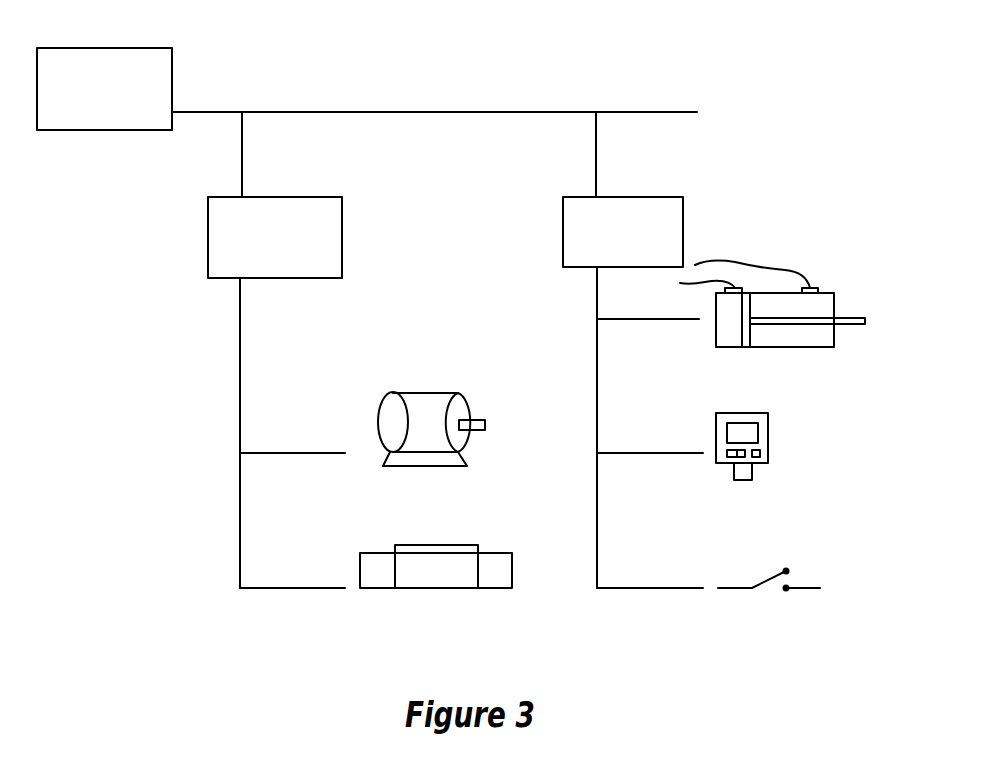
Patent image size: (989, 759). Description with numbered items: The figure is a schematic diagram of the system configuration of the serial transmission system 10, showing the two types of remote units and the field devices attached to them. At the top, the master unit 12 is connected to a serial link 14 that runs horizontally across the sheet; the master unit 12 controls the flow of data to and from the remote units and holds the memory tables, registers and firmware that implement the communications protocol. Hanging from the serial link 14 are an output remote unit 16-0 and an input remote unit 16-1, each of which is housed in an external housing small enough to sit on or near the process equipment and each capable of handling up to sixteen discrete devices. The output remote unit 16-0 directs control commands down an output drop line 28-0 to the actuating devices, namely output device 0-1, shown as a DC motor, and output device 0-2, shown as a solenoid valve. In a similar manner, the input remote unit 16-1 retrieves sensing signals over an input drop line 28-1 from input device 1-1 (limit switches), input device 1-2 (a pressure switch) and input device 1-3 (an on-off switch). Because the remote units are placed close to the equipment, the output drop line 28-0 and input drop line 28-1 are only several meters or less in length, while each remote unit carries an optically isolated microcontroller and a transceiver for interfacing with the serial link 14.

The serial transmission system 10 is at (636, 75).
The master unit 12 is at (165, 62).
The serial link 14 is at (331, 112).
The output remote unit 16-0 is at (335, 205).
The input remote unit 16-1 is at (677, 211).
The output drop line 28-0 is at (238, 358).
The input drop line 28-1 is at (596, 377).
The output device 0-1 is at (420, 407).
The output device 0-2 is at (441, 550).
The input device 1-1 is at (827, 300).
The input device 1-2 is at (763, 437).
The input device 1-3 is at (800, 588).